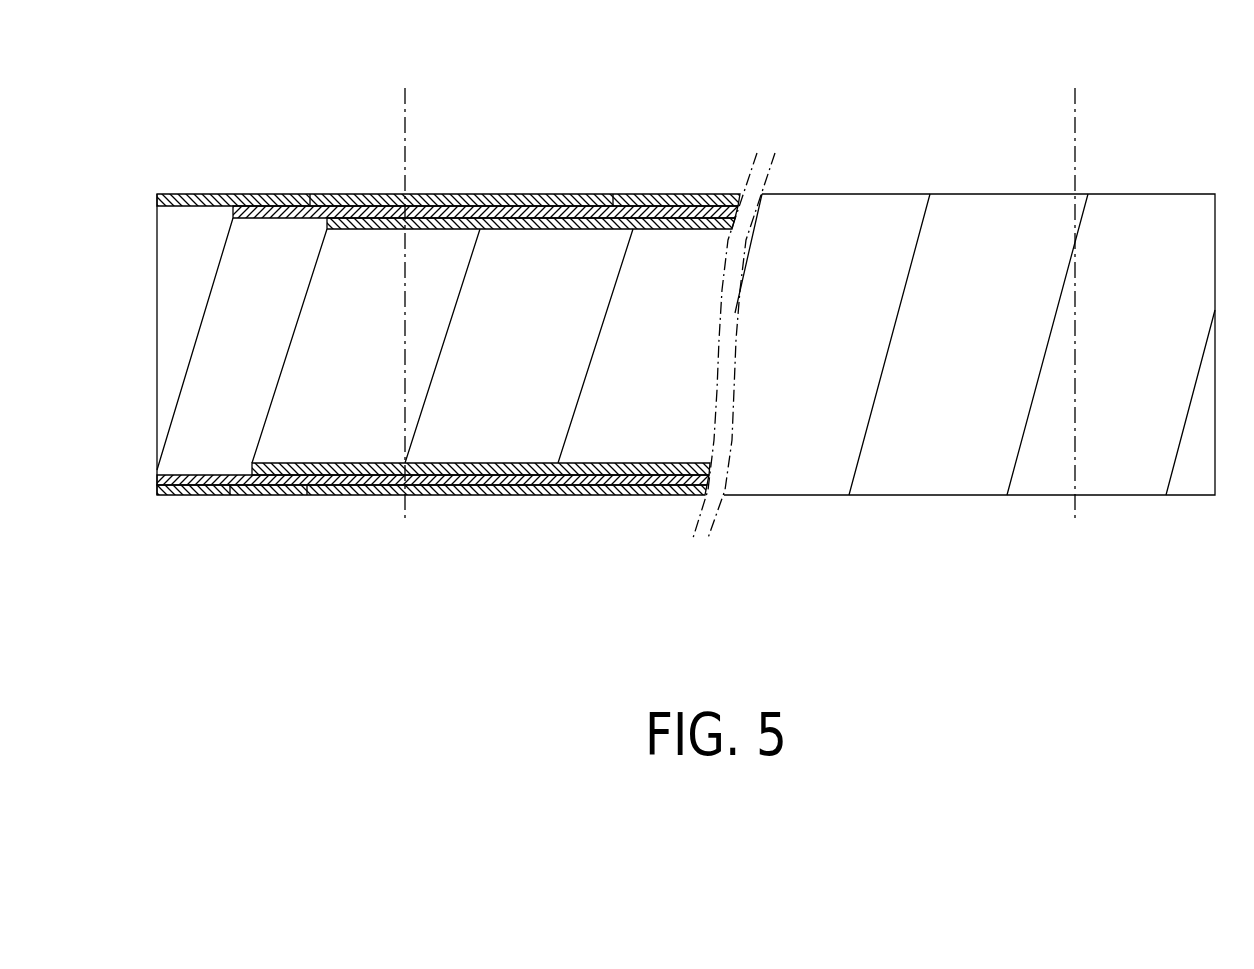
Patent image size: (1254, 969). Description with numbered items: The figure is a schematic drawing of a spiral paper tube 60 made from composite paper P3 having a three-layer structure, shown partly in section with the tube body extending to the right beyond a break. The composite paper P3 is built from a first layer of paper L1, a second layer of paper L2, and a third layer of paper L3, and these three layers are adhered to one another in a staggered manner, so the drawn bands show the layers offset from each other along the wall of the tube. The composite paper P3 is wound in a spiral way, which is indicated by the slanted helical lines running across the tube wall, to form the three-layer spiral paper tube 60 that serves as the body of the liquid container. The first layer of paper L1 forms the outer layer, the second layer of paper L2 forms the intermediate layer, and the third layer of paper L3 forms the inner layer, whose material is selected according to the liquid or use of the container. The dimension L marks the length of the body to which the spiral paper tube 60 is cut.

The spiral paper tube 60 is at (1135, 218).
The composite paper with three-layer structure P3 is at (270, 195).
The length L is at (405, 113).
The first layer of paper L1 is at (283, 490).
The second layer of paper L2 is at (203, 482).
The third layer of paper L3 is at (310, 463).